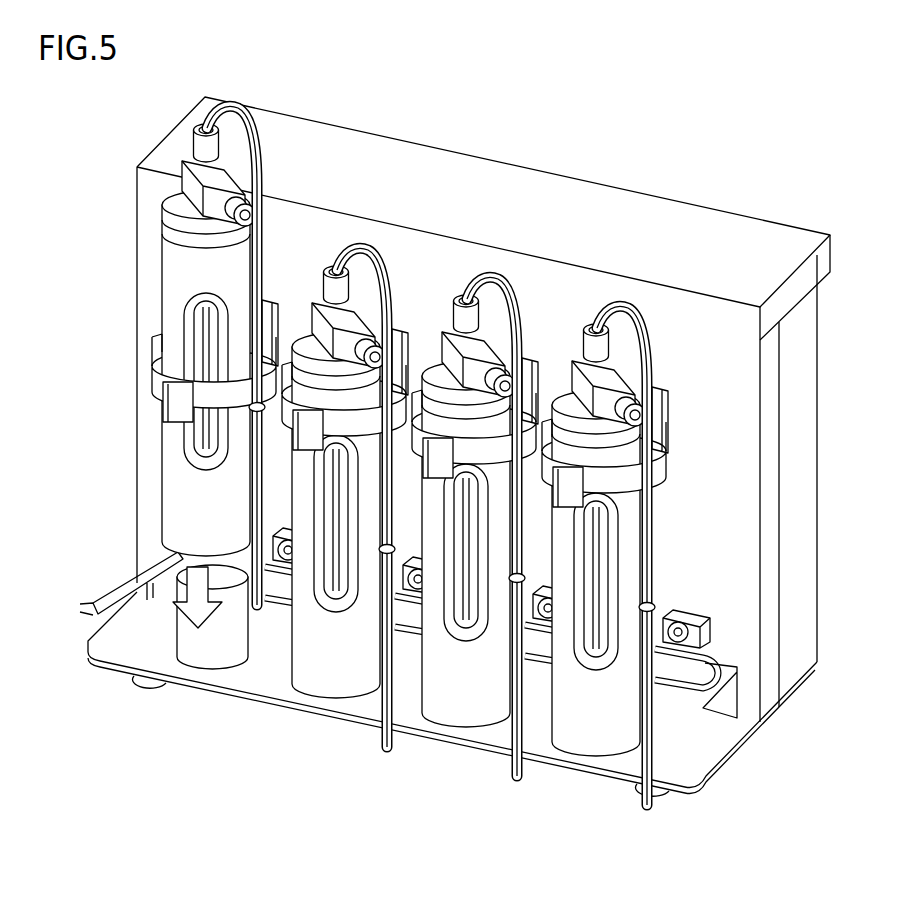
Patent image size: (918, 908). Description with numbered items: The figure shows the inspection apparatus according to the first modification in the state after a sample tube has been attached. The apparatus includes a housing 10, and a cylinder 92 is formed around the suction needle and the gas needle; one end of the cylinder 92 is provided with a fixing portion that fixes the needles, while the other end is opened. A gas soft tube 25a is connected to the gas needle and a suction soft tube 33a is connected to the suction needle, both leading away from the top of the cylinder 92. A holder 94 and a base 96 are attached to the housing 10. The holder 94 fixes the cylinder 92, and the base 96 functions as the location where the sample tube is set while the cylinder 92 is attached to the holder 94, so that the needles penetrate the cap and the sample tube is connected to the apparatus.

The housing 10 is at (137, 525).
The cylinder 92 is at (172, 293).
The holder 94 is at (157, 376).
The base 96 is at (208, 655).
The gas soft tube 25a is at (248, 243).
The suction soft tube 33a is at (243, 128).